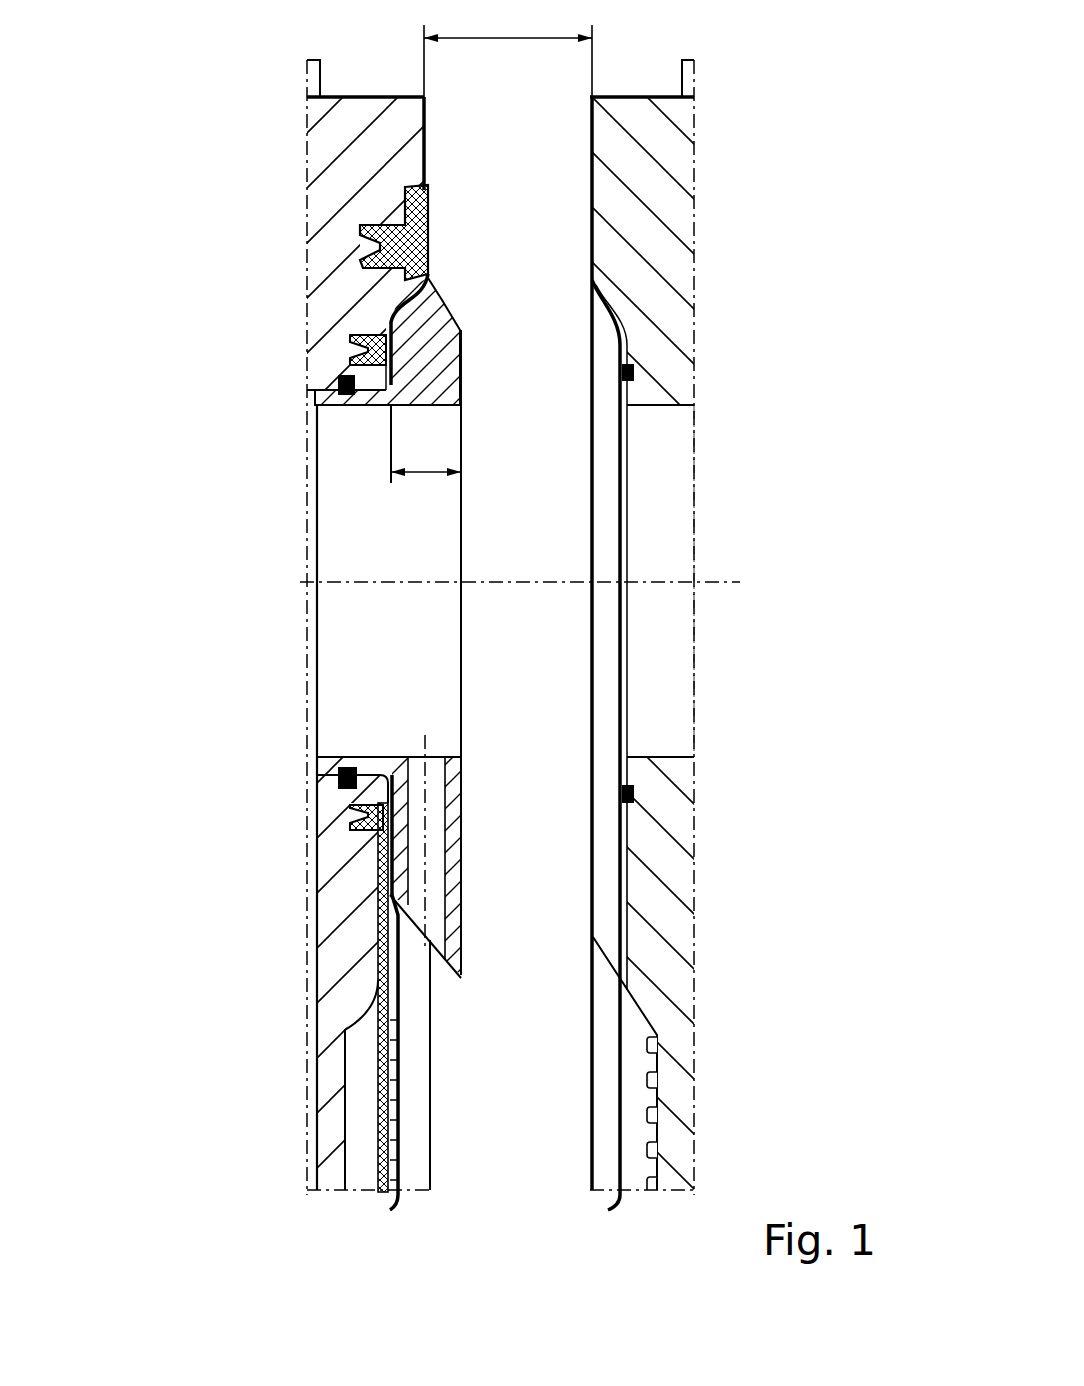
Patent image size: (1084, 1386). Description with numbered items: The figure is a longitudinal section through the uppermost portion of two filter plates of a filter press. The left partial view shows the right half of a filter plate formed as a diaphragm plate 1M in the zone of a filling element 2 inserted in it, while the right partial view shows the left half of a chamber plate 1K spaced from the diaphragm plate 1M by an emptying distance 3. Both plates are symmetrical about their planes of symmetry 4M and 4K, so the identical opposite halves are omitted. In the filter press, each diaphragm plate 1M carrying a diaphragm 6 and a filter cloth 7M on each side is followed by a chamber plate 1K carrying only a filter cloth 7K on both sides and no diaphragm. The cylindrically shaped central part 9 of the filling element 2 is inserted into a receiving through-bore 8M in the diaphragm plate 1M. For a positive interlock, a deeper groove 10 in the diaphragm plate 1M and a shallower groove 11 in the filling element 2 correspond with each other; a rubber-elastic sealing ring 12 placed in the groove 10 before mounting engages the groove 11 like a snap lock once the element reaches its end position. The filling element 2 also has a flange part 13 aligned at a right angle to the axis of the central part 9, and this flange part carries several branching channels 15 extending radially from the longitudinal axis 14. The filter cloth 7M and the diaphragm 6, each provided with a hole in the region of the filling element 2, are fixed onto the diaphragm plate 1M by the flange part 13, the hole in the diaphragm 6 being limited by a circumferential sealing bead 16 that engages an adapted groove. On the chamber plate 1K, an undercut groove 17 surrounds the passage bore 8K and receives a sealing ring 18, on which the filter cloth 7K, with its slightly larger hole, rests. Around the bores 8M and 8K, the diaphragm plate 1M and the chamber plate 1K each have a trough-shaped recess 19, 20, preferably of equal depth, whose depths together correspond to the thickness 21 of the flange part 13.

The diaphragm plate 1M is at (265, 100).
The chamber plate 1K is at (740, 100).
The filling element 2 is at (465, 283).
The emptying distance 3 is at (510, 38).
The trough-shaped recess 19 is at (388, 303).
The groove 10 is at (355, 350).
The groove 11 is at (342, 392).
The flange part 13 is at (437, 350).
The trough-shaped recess 20 is at (612, 313).
The sealing ring 18 is at (632, 372).
The thickness 21 is at (428, 472).
The receiving through-bore 8M is at (315, 425).
The passage bore 8K is at (662, 482).
The longitudinal axis 14 is at (305, 580).
The central part 9 is at (367, 758).
The sealing ring 12 is at (350, 768).
The branching channels 15 is at (345, 785).
The sealing bead 16 is at (355, 825).
The undercut groove 17 is at (632, 793).
The plane of symmetry 4K is at (697, 912).
The plane of symmetry 4M is at (315, 1005).
The diaphragm 6 is at (380, 1075).
The filter cloth 7M is at (400, 1195).
The filter cloth 7K is at (620, 1200).